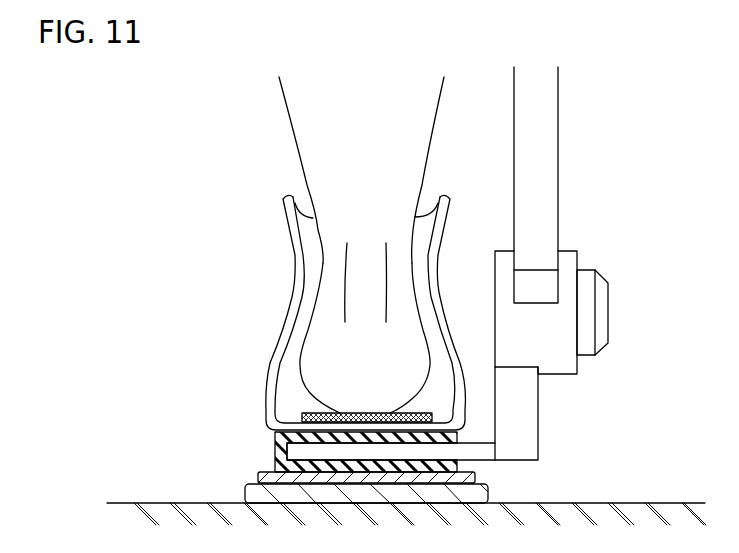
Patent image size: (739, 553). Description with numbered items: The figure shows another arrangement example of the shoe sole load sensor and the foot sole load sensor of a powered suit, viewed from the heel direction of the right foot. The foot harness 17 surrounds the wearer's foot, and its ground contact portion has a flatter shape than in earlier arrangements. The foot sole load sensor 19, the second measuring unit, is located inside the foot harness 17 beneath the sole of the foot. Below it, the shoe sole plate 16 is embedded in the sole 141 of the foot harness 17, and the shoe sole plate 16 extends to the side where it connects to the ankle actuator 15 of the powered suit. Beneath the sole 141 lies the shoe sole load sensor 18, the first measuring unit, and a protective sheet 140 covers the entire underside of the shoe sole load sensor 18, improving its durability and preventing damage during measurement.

The ankle actuator 15 is at (607, 312).
The shoe sole plate 16 is at (489, 455).
The foot harness 17 is at (293, 232).
The shoe sole load sensor 18 is at (255, 477).
The foot sole load sensor 19 is at (358, 412).
The protective sheet 140 is at (250, 493).
The sole 141 is at (275, 453).